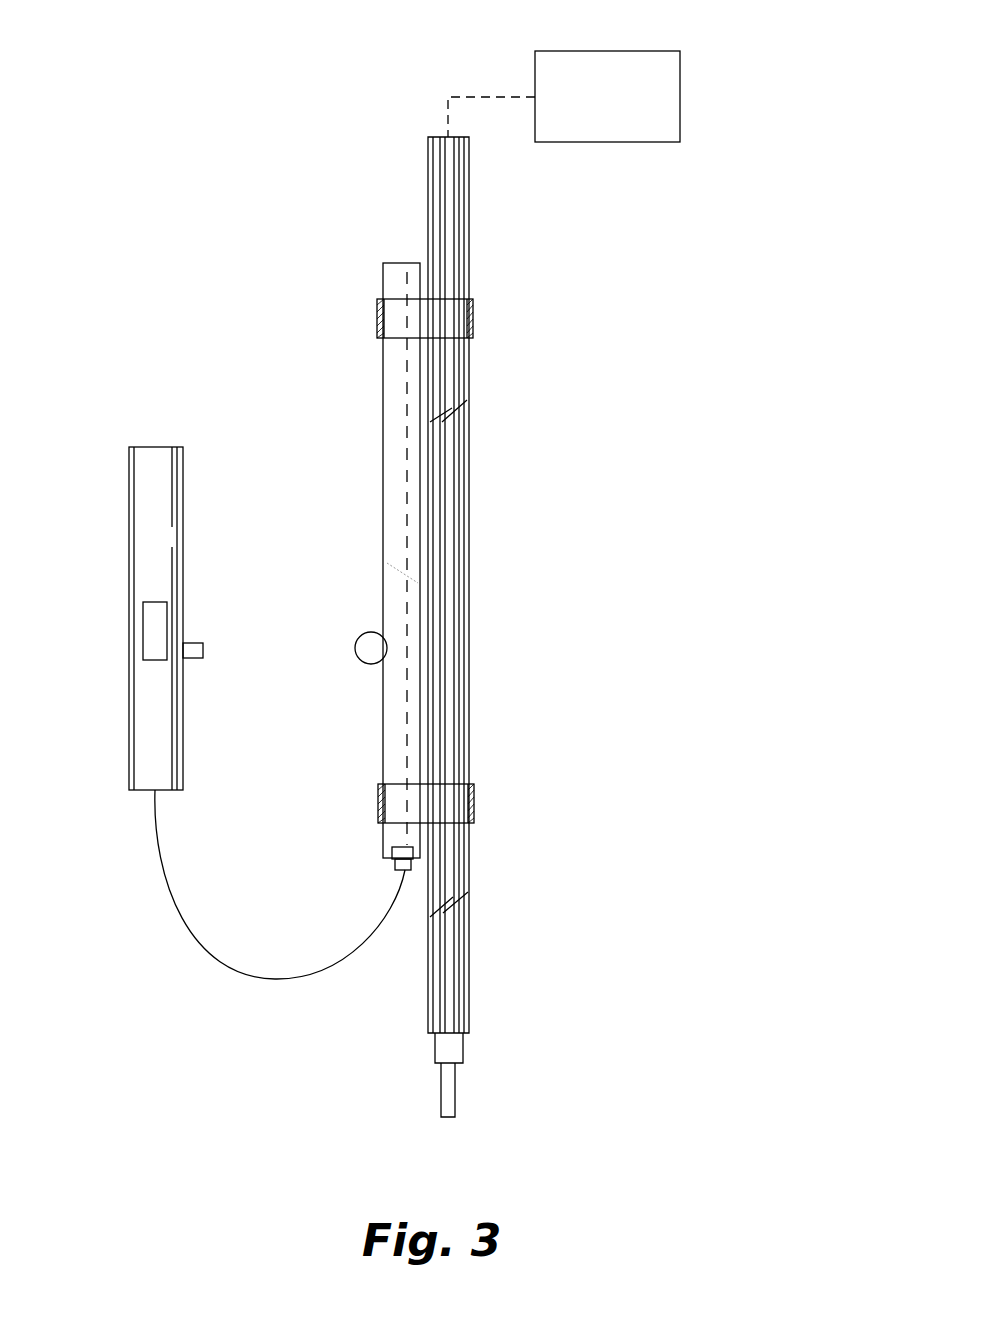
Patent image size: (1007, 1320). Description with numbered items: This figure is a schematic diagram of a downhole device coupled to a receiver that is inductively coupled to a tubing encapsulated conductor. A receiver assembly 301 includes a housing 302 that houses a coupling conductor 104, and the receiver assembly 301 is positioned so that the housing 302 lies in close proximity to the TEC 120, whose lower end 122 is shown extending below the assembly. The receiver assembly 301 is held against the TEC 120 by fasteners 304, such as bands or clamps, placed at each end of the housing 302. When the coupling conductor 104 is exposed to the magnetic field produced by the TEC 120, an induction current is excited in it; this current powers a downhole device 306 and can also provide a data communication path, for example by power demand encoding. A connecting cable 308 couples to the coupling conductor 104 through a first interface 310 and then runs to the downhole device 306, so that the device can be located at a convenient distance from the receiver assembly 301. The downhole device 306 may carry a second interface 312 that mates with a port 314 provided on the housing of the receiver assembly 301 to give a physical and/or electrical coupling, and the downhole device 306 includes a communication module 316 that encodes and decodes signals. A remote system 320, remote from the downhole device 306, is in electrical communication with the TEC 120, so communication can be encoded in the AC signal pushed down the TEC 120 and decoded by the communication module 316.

The receiver assembly 301 is at (353, 397).
The housing 302 is at (383, 612).
The coupling conductor 104 is at (407, 490).
The TEC 120 is at (468, 927).
The distal tip 122 is at (455, 1100).
The fastener 304 is at (474, 312).
The downhole device 306 is at (108, 573).
The connecting cable 308 is at (283, 979).
The first interface 310 is at (397, 873).
The second interface 312 is at (202, 652).
The port 314 is at (378, 667).
The communication module 316 is at (147, 637).
The remote system 320 is at (646, 51).